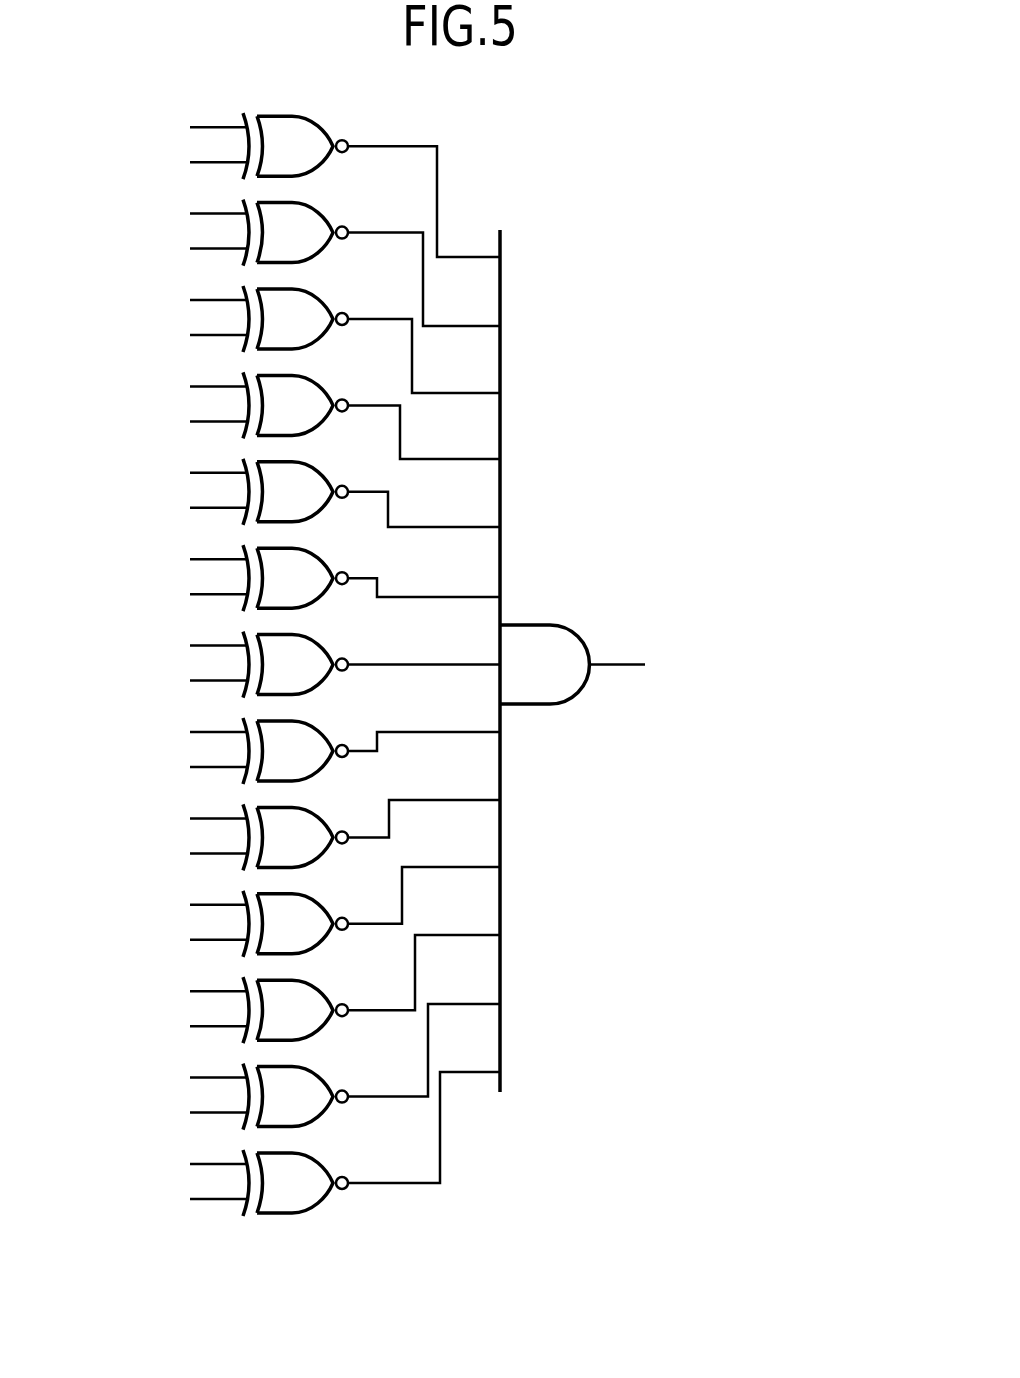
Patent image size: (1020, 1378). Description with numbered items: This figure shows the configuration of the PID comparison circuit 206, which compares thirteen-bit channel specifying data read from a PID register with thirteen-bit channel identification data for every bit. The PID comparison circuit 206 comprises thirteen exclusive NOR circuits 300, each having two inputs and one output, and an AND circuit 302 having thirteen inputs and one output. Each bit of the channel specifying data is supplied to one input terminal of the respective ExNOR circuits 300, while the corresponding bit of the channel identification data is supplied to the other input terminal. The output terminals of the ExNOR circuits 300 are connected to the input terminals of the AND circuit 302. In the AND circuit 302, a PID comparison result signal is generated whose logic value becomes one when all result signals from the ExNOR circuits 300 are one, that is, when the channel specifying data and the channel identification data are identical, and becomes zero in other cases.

The PID comparison circuit 206 is at (766, 205).
The ExNOR circuits 300 is at (282, 680).
The AND circuit 302 is at (555, 705).